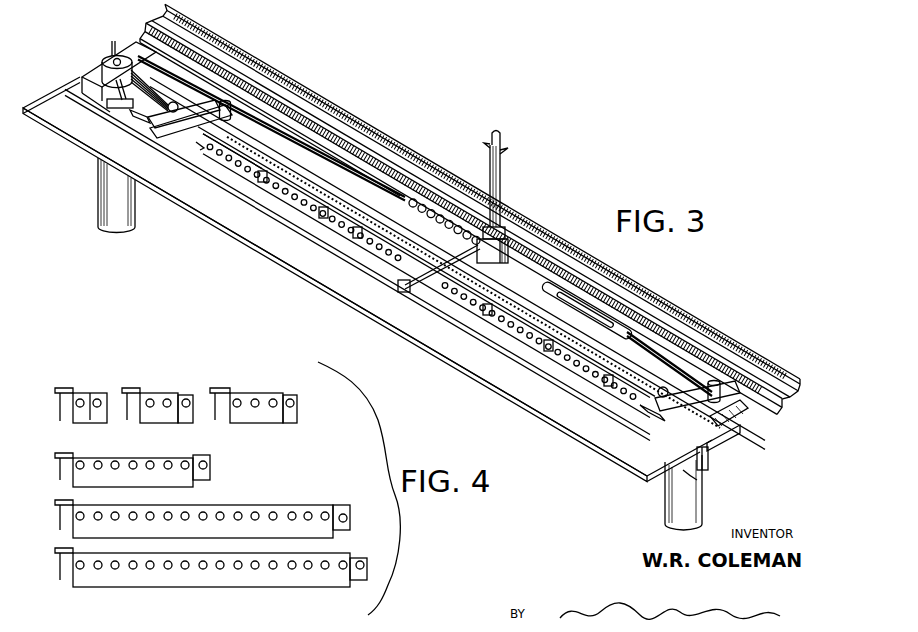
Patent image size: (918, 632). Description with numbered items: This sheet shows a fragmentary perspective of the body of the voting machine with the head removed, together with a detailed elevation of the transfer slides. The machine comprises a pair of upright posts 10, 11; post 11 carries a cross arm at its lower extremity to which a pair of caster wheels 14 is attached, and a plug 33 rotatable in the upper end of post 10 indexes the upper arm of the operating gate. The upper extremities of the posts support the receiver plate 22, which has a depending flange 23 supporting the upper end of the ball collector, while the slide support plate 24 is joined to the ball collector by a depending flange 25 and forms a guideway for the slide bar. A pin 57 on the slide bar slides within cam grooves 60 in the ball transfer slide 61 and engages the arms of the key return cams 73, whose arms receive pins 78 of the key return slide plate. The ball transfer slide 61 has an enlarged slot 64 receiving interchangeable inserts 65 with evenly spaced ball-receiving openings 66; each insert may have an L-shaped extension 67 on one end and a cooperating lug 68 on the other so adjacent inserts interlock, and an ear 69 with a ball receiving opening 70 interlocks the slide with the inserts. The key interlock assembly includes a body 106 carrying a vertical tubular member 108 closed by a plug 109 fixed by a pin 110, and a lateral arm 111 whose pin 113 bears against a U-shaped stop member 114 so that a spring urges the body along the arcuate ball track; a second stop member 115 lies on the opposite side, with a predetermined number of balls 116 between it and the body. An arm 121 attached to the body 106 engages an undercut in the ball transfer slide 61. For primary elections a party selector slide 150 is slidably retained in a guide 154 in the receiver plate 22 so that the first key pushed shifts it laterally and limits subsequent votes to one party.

In FIG. 3, the upright post 10 is at (96, 200).
In FIG. 3, the upright post 11 is at (700, 507).
In FIG. 3, the caster wheels 14 is at (350, 173).
In FIG. 3, the receiver plate 22 is at (772, 405).
In FIG. 3, the depending flange 23 is at (712, 460).
In FIG. 3, the slide support plate 24 is at (395, 320).
In FIG. 3, the depending flange 25 is at (695, 483).
In FIG. 3, the plug 33 is at (105, 56).
In FIG. 3, the pin 57 is at (170, 122).
In FIG. 3, the cam grooves 60 is at (137, 120).
In FIG. 3, the ball transfer slide 61 is at (578, 385).
In FIG. 3, the enlarged slot 64 is at (265, 205).
In FIG. 3, the interchangeable inserts 65 is at (530, 355).
In FIG. 4, the interchangeable inserts 65 is at (86, 424).
In FIG. 3, the ball-receiving openings 66 is at (457, 303).
In FIG. 4, the ball-receiving openings 66 is at (93, 381).
In FIG. 4, the L-shaped extension 67 is at (118, 395).
In FIG. 3, the cooperating lug 68 is at (435, 278).
In FIG. 4, the cooperating lug 68 is at (185, 398).
In FIG. 3, the ear 69 is at (195, 150).
In FIG. 3, the ball receiving opening 70 is at (198, 145).
In FIG. 3, the key return cams 73 is at (190, 100).
In FIG. 3, the pins 78 is at (228, 100).
In FIG. 3, the body 106 is at (507, 232).
In FIG. 3, the tubular member 108 is at (502, 175).
In FIG. 3, the plug 109 is at (500, 134).
In FIG. 3, the pin 110 is at (508, 150).
In FIG. 3, the arm 111 is at (527, 270).
In FIG. 3, the pin 113 is at (578, 287).
In FIG. 3, the U-shaped stop member 114 is at (583, 293).
In FIG. 3, the second stop member 115 is at (405, 196).
In FIG. 3, the balls 116 is at (478, 176).
In FIG. 3, the arm 121 is at (413, 283).
In FIG. 3, the party selector slide 150 is at (262, 172).
In FIG. 3, the guide 154 is at (740, 430).